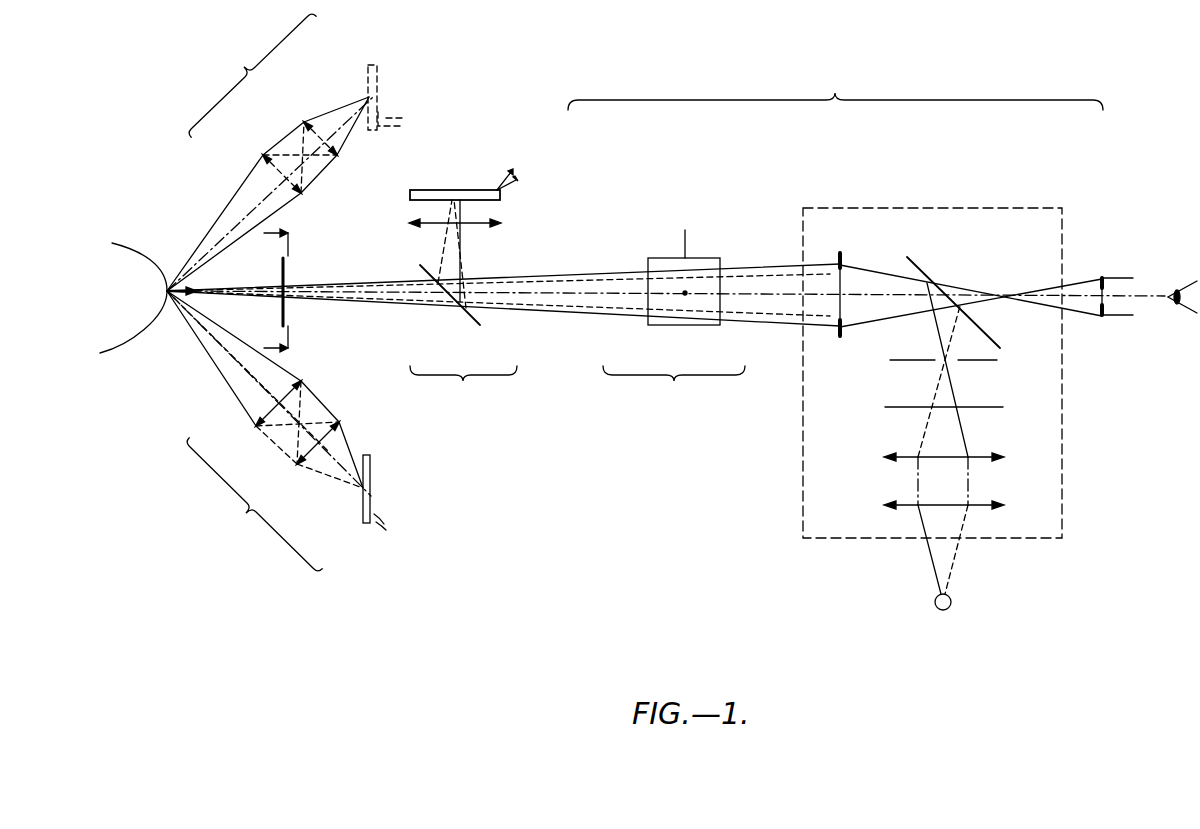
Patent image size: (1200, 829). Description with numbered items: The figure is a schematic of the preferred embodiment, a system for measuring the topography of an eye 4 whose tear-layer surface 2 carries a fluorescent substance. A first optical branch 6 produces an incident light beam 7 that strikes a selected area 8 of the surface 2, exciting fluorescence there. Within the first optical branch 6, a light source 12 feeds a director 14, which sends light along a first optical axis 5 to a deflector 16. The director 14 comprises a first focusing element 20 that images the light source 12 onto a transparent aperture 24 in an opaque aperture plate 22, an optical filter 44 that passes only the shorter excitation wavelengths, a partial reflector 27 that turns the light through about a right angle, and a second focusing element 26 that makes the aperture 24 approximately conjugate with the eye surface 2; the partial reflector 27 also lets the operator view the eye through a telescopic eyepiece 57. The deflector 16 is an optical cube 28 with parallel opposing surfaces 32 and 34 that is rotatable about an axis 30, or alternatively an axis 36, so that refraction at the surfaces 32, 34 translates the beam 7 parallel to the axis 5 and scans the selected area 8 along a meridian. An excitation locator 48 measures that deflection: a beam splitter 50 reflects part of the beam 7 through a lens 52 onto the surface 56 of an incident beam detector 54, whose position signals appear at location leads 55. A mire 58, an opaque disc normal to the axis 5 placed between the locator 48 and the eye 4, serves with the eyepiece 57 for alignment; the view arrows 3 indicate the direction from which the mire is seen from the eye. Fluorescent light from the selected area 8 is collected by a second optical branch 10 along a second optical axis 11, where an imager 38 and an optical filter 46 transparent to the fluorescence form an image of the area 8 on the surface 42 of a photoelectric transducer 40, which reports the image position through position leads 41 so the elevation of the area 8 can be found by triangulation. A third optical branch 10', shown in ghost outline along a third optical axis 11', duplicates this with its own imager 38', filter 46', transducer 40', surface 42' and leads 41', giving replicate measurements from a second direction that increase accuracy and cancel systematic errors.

The eye surface 2 is at (135, 343).
The section line 3 is at (269, 291).
The eye 4 is at (130, 308).
The first optical axis 5 is at (788, 297).
The first optical branch 6 is at (835, 90).
The incident light beam 7 is at (372, 296).
The selected area 8 is at (167, 289).
The second optical branch 10 is at (254, 504).
The third optical branch 10' is at (252, 75).
The second optical axis 11 is at (269, 393).
The third optical axis 11' is at (289, 194).
The light source 12 is at (952, 601).
The director 14 is at (1075, 220).
The deflector 16 is at (674, 333).
The first focusing element 20 is at (985, 458).
The opaque aperture plate 22 is at (997, 361).
The transparent aperture 24 is at (950, 365).
The second focusing element 26 is at (843, 255).
The partial reflector 27 is at (926, 270).
The optical cube 28 is at (660, 326).
The axis 30 is at (688, 241).
The surface 32 is at (720, 282).
The surface 34 is at (648, 282).
The axis 36 is at (685, 293).
The imager 38 is at (262, 429).
The imager 38' is at (266, 151).
The photoelectric transducer 40 is at (386, 545).
The photoelectric transducer 40' is at (401, 58).
The position leads 41 is at (399, 510).
The position leads 41' is at (413, 109).
The transducer surface 42 is at (340, 492).
The transducer surface 42' is at (341, 97).
The optical filter 44 is at (1003, 408).
The optical filter 46 is at (332, 422).
The optical filter 46' is at (341, 163).
The excitation locator 48 is at (463, 304).
The beam splitter 50 is at (478, 326).
The lens 52 is at (490, 227).
The incident beam detector 54 is at (500, 196).
The location leads 55 is at (495, 180).
The detector surface 56 is at (480, 203).
The telescopic eyepiece 57 is at (1104, 280).
The mire 58 is at (288, 313).